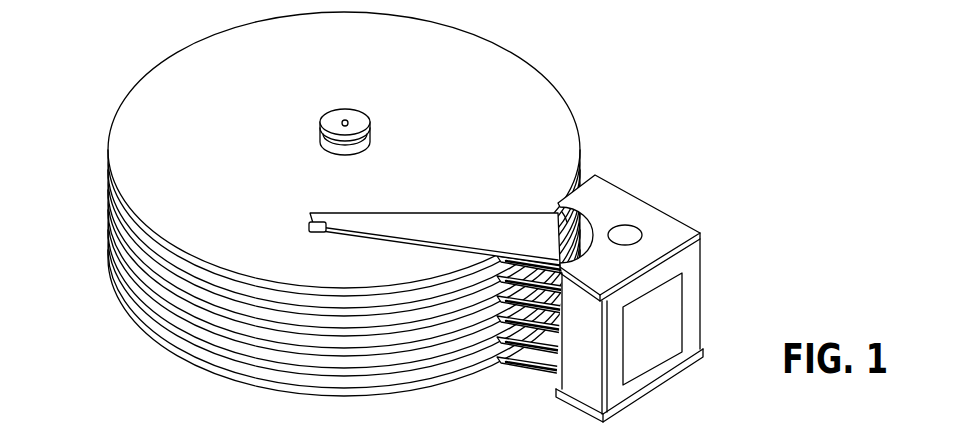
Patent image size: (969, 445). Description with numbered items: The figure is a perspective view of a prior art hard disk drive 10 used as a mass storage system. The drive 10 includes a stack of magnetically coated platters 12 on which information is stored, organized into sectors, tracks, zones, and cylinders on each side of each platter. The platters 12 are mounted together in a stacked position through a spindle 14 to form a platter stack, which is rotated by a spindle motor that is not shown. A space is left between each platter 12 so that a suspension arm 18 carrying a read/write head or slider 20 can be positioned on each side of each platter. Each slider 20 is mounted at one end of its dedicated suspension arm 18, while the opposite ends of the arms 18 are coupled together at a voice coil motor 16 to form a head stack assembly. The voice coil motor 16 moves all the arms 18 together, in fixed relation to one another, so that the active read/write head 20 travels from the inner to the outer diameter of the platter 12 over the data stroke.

The hard disk-drive 10 is at (618, 71).
The magnetically coated platters 12 is at (94, 142).
The spindle 14 is at (340, 118).
The voice coil motor 16 is at (659, 222).
The suspension arm 18 is at (403, 215).
The read/write head or slider 20 is at (308, 228).